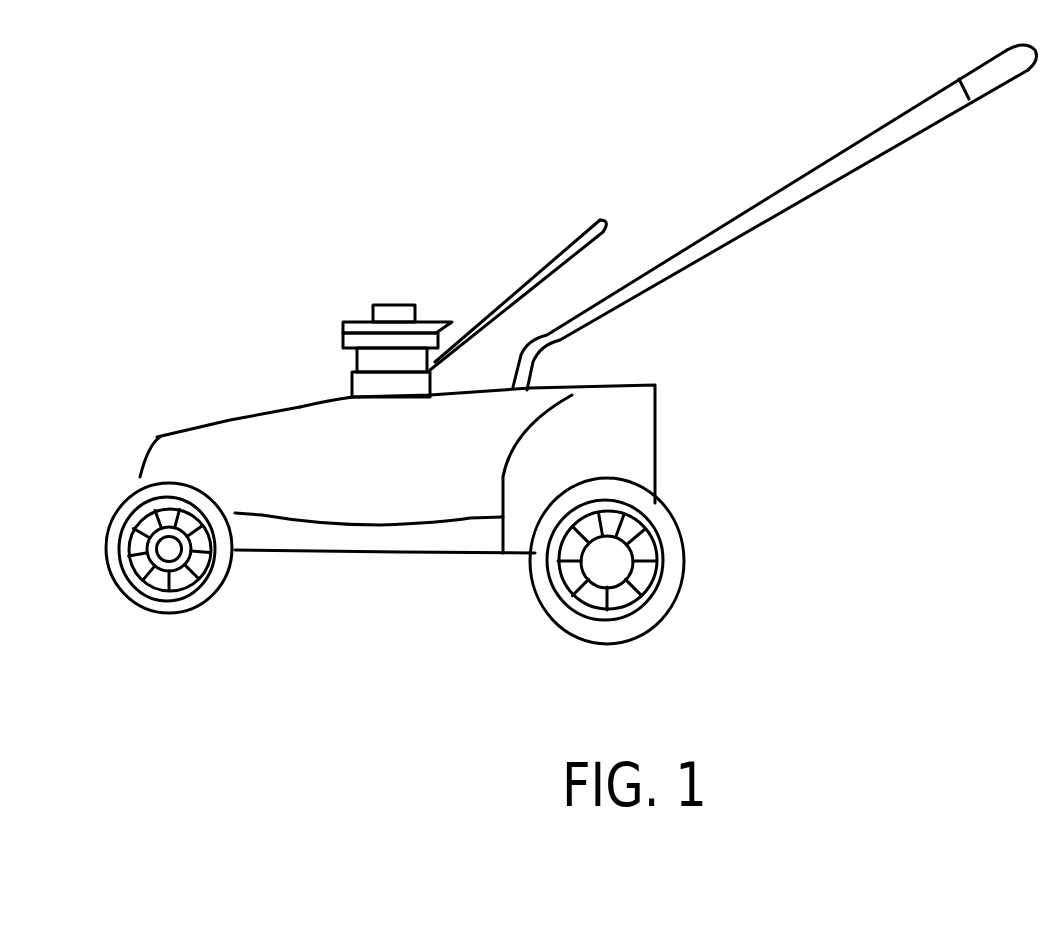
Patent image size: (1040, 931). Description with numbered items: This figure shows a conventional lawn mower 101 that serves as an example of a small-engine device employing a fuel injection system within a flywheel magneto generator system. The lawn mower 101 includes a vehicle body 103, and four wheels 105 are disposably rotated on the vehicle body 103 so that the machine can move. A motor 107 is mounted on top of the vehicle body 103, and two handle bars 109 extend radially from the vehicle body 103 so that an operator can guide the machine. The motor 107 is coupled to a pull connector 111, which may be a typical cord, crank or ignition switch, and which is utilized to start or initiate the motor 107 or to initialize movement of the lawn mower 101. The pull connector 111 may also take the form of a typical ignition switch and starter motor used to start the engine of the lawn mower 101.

The lawn mower 101 is at (157, 438).
The vehicle body 103 is at (262, 410).
The wheels 105 is at (140, 610).
The motor 107 is at (395, 303).
The handle bars 109 is at (877, 128).
The pull connector 111 is at (607, 225).